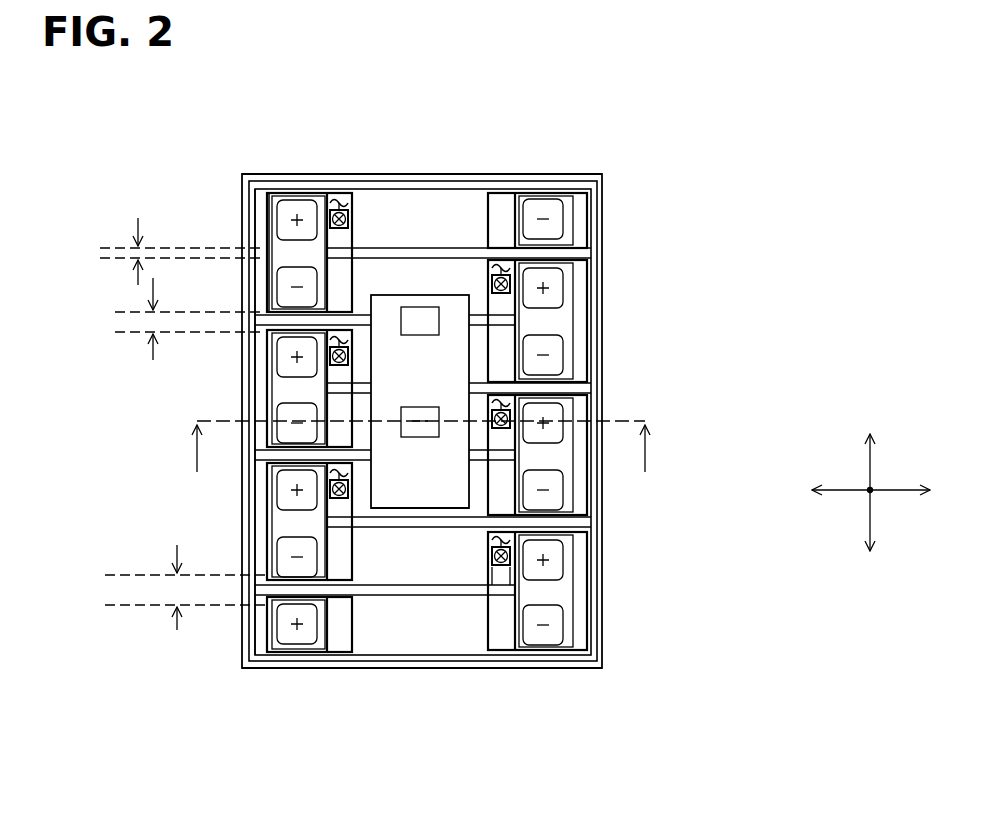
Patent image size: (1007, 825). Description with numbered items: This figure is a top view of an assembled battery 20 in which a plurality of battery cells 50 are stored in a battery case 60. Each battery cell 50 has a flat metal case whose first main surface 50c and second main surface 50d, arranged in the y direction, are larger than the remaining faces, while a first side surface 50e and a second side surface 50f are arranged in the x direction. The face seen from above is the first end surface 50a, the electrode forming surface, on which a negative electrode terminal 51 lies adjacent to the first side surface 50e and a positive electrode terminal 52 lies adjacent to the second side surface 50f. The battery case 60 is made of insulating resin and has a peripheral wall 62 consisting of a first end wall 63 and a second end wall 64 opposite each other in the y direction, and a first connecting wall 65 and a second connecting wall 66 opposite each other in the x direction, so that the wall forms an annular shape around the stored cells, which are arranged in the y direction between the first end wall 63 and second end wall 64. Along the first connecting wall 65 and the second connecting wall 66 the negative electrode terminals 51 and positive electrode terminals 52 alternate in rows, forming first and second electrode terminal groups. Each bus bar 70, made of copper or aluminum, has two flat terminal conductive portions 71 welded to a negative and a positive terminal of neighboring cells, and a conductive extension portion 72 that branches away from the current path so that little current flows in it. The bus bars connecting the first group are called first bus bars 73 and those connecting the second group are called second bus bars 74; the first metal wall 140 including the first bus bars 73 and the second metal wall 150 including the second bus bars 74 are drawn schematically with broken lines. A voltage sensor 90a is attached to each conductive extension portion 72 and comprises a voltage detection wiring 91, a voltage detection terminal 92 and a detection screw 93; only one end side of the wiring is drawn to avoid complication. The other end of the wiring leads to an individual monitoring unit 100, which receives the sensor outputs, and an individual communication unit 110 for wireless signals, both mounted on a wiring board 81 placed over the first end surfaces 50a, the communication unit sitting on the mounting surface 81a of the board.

The assembled battery 20 is at (664, 106).
The battery cell 50 is at (580, 337).
The first end surface 50a is at (326, 648).
The first main surface 50c is at (440, 248).
The second main surface 50d is at (493, 193).
The first side surface 50e is at (592, 250).
The second side surface 50f is at (265, 205).
The negative electrode terminal 51 is at (275, 292).
The positive electrode terminal 52 is at (565, 297).
The battery case 60 is at (606, 171).
The peripheral wall 62 is at (598, 363).
The first end wall 63 is at (463, 668).
The second end wall 64 is at (552, 173).
The first connecting wall 65 is at (256, 392).
The second connecting wall 66 is at (592, 395).
The bus bar 70 is at (572, 728).
The terminal conductive portion 71 is at (552, 652).
The conductive extension portion 72 is at (508, 575).
The first bus bar 73 is at (264, 546).
The second bus bar 74 is at (580, 531).
The wiring board 81 is at (445, 508).
The mounting surface 81a is at (400, 497).
The voltage sensor 90a is at (516, 281).
The voltage detection wiring 91 is at (523, 545).
The voltage detection terminal 92 is at (517, 598).
The detection screw 93 is at (506, 563).
The individual monitoring unit 100 is at (412, 307).
The individual communication unit 110 is at (408, 407).
The first metal wall 140 is at (262, 238).
The second metal wall 150 is at (568, 204).